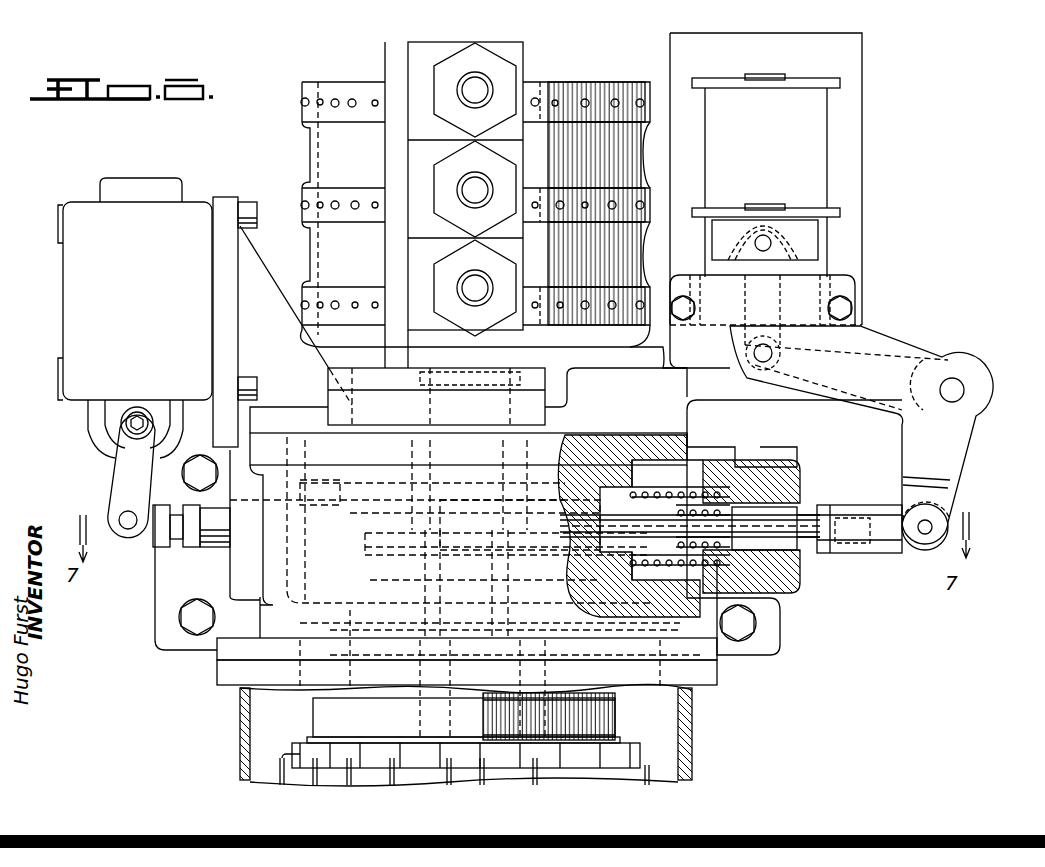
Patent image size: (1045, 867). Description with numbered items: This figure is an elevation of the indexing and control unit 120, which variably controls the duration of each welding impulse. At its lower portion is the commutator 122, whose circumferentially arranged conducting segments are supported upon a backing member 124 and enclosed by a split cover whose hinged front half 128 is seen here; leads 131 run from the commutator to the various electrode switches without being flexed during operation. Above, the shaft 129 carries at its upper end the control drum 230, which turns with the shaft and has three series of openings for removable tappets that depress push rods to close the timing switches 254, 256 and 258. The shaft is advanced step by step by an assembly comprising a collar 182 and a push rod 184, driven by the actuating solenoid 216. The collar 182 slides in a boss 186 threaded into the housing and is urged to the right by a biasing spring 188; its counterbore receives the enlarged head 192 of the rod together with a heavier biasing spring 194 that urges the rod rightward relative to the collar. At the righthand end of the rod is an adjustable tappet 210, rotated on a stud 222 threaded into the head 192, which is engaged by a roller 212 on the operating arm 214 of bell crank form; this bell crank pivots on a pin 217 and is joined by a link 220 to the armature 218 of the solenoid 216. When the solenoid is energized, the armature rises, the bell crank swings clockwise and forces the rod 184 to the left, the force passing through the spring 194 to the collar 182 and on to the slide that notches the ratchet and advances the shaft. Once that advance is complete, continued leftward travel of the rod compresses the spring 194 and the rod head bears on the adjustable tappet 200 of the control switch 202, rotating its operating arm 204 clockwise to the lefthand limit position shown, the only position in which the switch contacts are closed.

The indexing and control unit 120 is at (467, 511).
The commutator 122 is at (640, 757).
The backing member 124 is at (600, 716).
The front half 128 is at (690, 722).
The shaft 129 is at (445, 563).
The leads 131 is at (265, 772).
The collar 182 is at (770, 470).
The push rod 184 is at (880, 553).
The boss 186 is at (800, 590).
The biasing spring 188 is at (688, 490).
The enlarged head 192 is at (782, 515).
The biasing spring 194 is at (712, 500).
The tappet 200 is at (215, 550).
The control switch 202 is at (85, 318).
The operating arm 204 is at (130, 480).
The tappet 210 is at (832, 505).
The roller 212 is at (954, 513).
The operating arm 214 is at (953, 433).
The actuating solenoid 216 is at (822, 153).
The pin 217 is at (955, 383).
The armature 218 is at (810, 238).
The link 220 is at (780, 300).
The stud 222 is at (840, 550).
The control drum 230 is at (305, 140).
The timing switch 254 is at (512, 50).
The timing switch 256 is at (408, 140).
The timing switch 258 is at (408, 238).